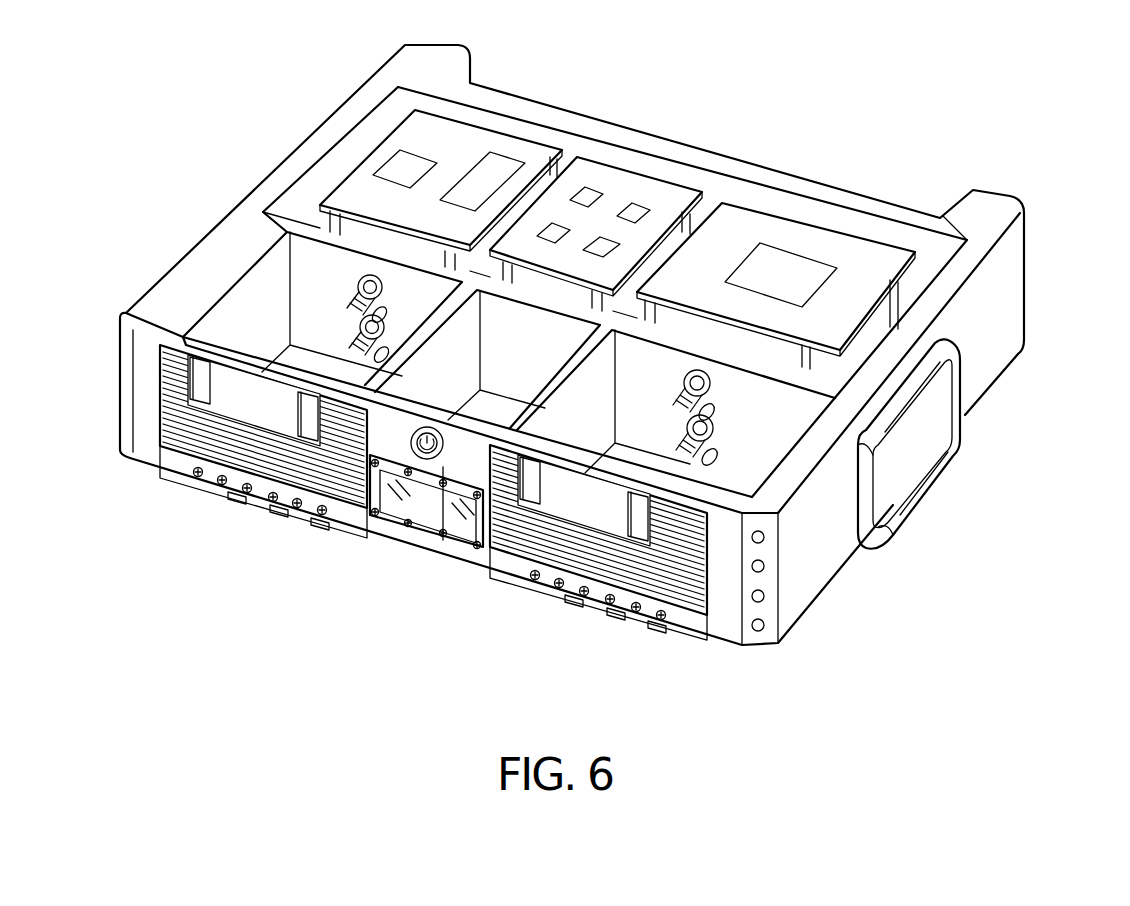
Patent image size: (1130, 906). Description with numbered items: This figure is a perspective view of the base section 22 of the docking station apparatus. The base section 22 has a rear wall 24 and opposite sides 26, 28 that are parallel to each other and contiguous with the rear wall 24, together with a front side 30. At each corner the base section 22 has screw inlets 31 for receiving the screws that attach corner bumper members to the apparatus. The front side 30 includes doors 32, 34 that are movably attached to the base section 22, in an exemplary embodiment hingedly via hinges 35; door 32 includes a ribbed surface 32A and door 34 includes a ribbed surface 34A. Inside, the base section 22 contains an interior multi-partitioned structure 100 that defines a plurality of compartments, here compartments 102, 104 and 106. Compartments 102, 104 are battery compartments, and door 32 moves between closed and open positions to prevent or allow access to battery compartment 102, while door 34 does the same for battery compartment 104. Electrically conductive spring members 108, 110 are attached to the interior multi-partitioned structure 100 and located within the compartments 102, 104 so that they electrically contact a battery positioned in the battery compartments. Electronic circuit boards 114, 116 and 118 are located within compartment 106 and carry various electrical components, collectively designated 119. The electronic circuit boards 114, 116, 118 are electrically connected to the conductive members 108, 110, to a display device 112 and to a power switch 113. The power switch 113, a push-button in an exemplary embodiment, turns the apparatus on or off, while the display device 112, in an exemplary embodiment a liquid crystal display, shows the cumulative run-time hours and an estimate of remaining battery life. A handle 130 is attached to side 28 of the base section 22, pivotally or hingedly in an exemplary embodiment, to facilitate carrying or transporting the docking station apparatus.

The base section 22 is at (861, 90).
The rear wall 24 is at (625, 129).
The side 26 is at (267, 172).
The side 28 is at (990, 353).
The front side 30 is at (438, 536).
The screw inlets 31 is at (765, 628).
The door 32 is at (345, 520).
The ribbed surface 32A is at (178, 424).
The door 34 is at (670, 618).
The ribbed surface 34A is at (490, 555).
The hinges 35 is at (260, 500).
The interior multi-partitioned structure 100 is at (548, 315).
The compartment 102 is at (240, 288).
The compartment 104 is at (707, 455).
The compartment 106 is at (908, 237).
The electrically conductive spring member 108 is at (382, 278).
The electrically conductive spring member 110 is at (346, 328).
The display device 112 is at (402, 505).
The power switch 113 is at (443, 540).
The electronic circuit board 114 is at (450, 133).
The electronic circuit board 116 is at (587, 172).
The electronic circuit board 118 is at (815, 235).
The electrical components 119 is at (500, 163).
The handle 130 is at (923, 490).